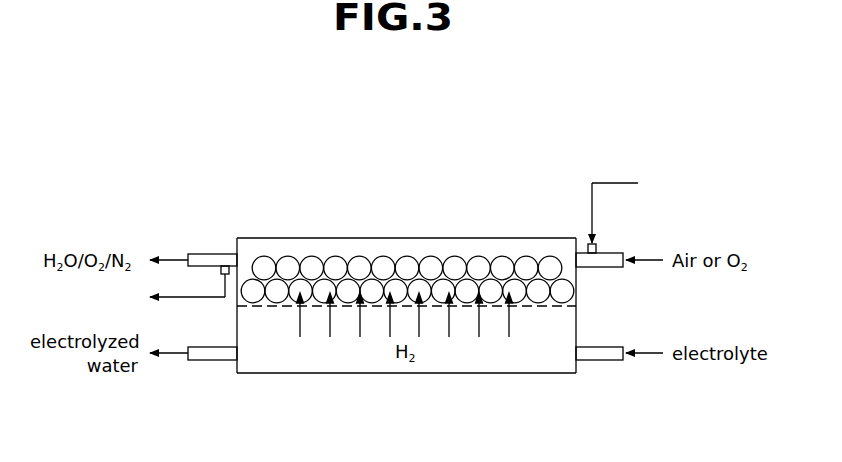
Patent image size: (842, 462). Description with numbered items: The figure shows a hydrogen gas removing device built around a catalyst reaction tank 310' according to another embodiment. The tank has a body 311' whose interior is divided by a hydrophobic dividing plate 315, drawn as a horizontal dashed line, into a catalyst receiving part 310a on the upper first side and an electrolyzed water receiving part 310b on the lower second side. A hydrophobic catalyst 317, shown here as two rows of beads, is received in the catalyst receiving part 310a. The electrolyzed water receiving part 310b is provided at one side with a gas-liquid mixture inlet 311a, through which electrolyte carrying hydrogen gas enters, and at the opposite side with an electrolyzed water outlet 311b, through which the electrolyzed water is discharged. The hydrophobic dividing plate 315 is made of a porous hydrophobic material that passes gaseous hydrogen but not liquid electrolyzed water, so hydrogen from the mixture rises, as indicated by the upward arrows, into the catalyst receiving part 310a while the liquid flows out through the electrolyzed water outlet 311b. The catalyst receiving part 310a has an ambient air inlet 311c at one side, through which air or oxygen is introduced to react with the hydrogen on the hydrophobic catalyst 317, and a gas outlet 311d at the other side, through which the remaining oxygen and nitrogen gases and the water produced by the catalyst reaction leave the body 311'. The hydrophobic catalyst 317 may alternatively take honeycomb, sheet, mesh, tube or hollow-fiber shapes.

The catalyst reaction tank 310' is at (382, 278).
The catalyst receiving part 310a is at (540, 240).
The electrolyzed water receiving part 310b is at (545, 374).
The body 311' is at (406, 217).
The gas-liquid mixture inlet 311a is at (607, 349).
The electrolyzed water outlet 311b is at (205, 349).
The ambient air inlet 311c is at (607, 254).
The gas outlet 311d is at (203, 254).
The hydrophobic dividing plate 315 is at (262, 308).
The hydrophobic catalyst 317 is at (385, 262).